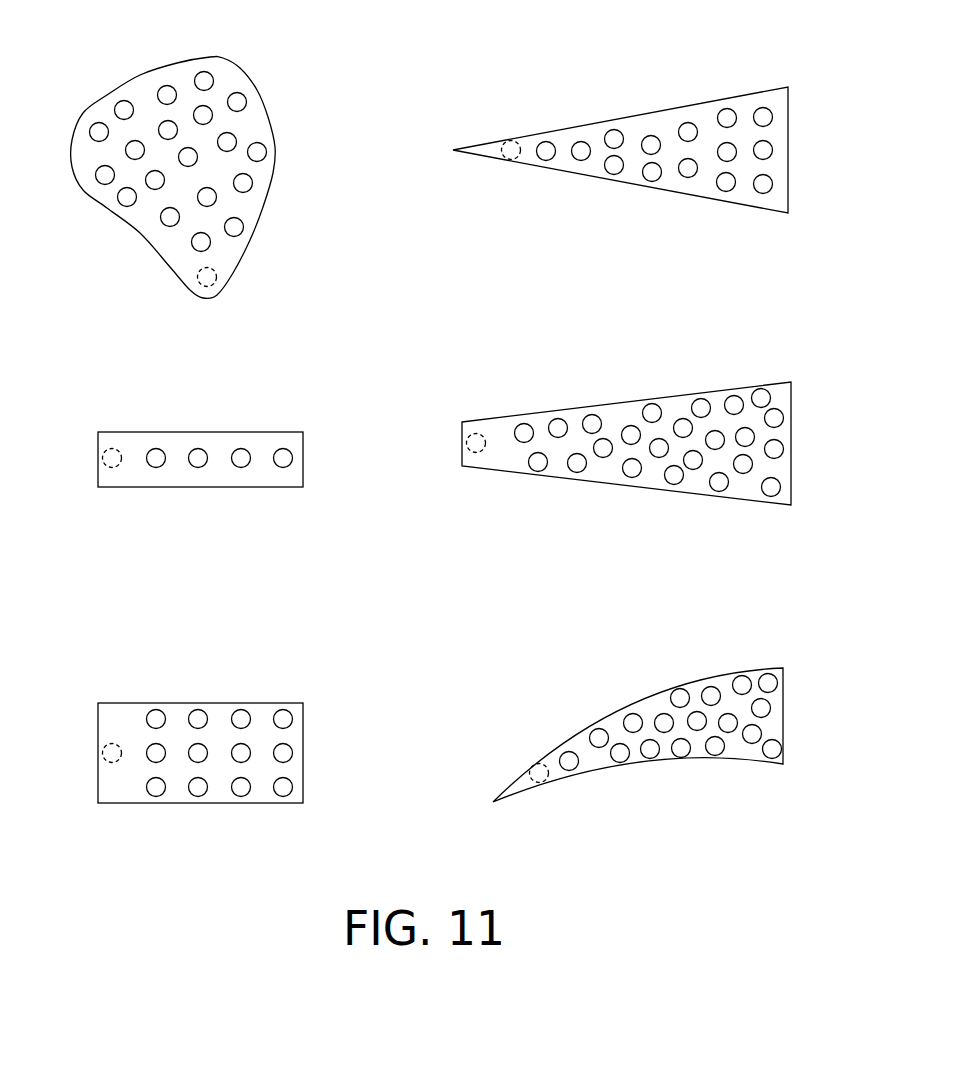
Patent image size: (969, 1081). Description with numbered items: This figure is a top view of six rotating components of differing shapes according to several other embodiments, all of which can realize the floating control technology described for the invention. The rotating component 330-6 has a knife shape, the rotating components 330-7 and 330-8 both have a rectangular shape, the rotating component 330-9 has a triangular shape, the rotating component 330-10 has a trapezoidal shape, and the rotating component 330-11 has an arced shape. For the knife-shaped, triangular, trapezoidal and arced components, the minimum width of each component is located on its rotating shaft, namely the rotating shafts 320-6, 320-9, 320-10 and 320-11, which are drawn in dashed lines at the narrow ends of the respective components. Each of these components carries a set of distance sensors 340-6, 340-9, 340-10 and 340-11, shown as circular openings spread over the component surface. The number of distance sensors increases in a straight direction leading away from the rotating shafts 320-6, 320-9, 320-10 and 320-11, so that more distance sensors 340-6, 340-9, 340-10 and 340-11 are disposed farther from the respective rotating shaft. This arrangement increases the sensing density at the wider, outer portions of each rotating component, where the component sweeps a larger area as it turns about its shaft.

The rotating component 330-6 is at (150, 73).
The distance sensor 340-6 is at (167, 86).
The rotating shaft 320-6 is at (216, 275).
The rotating component 330-7 is at (177, 432).
The rotating component 330-8 is at (177, 703).
The rotating component 330-9 is at (622, 118).
The rotating shaft 320-9 is at (511, 141).
The distance sensor 340-9 is at (772, 151).
The rotating component 330-10 is at (630, 402).
The rotating shaft 320-10 is at (474, 434).
The distance sensor 340-10 is at (703, 399).
The rotating component 330-11 is at (623, 707).
The rotating shaft 320-11 is at (530, 773).
The distance sensor 340-11 is at (715, 755).